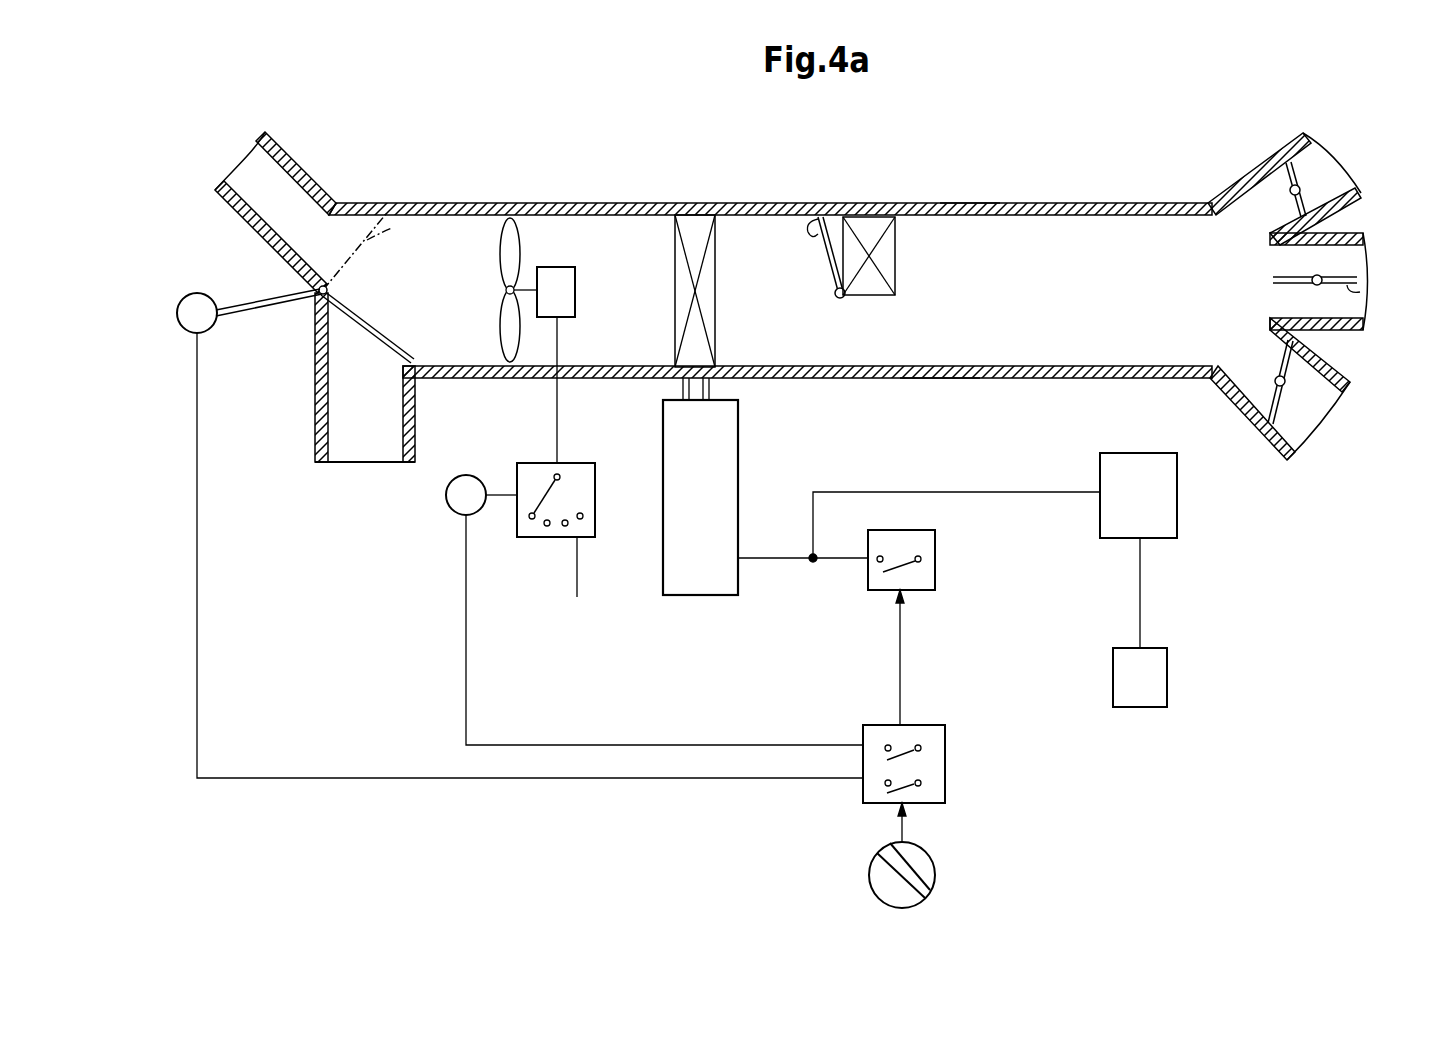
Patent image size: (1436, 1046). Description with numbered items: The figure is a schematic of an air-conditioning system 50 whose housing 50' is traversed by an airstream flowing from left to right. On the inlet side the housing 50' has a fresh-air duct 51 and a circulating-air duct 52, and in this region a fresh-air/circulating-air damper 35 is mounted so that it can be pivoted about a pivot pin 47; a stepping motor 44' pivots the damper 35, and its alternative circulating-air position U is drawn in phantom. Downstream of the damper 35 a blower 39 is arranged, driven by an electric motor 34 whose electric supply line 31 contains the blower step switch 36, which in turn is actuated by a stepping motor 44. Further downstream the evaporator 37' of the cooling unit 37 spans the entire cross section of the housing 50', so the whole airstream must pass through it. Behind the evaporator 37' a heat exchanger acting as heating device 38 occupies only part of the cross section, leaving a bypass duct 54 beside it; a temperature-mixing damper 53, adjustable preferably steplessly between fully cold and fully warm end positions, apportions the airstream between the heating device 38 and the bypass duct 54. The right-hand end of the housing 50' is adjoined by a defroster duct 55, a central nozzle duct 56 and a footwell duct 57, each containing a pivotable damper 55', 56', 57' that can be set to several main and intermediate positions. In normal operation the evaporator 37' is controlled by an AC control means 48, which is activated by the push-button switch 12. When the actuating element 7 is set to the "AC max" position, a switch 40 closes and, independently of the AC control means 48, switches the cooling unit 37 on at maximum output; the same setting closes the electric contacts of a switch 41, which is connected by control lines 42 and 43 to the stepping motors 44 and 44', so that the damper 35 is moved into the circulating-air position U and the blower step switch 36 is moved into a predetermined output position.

The actuating element 7 is at (927, 863).
The push-button switch 12 is at (1160, 685).
The electric supply line 31 is at (557, 428).
The electric motor 34 is at (580, 284).
The fresh-air/circulating-air damper 35 is at (386, 325).
The blower step switch 36 is at (533, 530).
The cooling unit 37 is at (733, 497).
The evaporator 37' is at (698, 270).
The heating device 38 is at (877, 228).
The blower 39 is at (532, 246).
The switch 40 is at (935, 572).
The switch 41 is at (940, 738).
The control line 42 is at (521, 783).
The control line 43 is at (466, 688).
The stepping motor 44 is at (456, 502).
The stepping motor 44' is at (247, 284).
The pivot pin 47 is at (335, 290).
The AC control means 48 is at (1170, 520).
The air-conditioning system 50 is at (770, 246).
The housing 50' is at (970, 172).
The fresh-air duct 51 is at (283, 208).
The circulating-air duct 52 is at (385, 425).
The temperature-mixing damper 53 is at (810, 215).
The bypass duct 54 is at (885, 327).
The defroster duct 55 is at (1272, 189).
The pivotable damper 55' is at (1344, 180).
The central nozzle duct 56 is at (1347, 274).
The pivotable damper 56' is at (1354, 292).
The footwell duct 57 is at (1307, 389).
The pivotable damper 57' is at (1320, 404).
The circulating-air position U is at (415, 214).